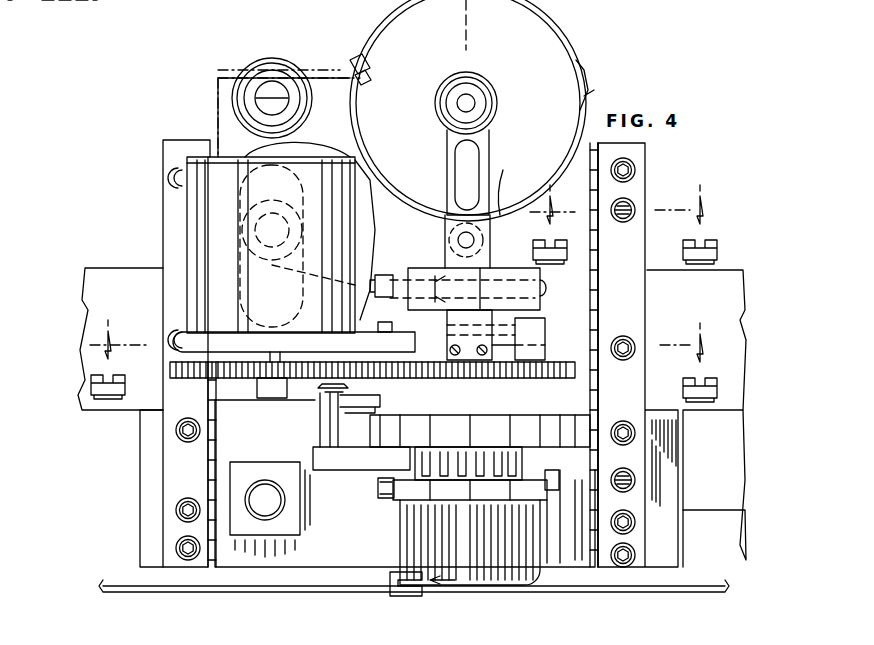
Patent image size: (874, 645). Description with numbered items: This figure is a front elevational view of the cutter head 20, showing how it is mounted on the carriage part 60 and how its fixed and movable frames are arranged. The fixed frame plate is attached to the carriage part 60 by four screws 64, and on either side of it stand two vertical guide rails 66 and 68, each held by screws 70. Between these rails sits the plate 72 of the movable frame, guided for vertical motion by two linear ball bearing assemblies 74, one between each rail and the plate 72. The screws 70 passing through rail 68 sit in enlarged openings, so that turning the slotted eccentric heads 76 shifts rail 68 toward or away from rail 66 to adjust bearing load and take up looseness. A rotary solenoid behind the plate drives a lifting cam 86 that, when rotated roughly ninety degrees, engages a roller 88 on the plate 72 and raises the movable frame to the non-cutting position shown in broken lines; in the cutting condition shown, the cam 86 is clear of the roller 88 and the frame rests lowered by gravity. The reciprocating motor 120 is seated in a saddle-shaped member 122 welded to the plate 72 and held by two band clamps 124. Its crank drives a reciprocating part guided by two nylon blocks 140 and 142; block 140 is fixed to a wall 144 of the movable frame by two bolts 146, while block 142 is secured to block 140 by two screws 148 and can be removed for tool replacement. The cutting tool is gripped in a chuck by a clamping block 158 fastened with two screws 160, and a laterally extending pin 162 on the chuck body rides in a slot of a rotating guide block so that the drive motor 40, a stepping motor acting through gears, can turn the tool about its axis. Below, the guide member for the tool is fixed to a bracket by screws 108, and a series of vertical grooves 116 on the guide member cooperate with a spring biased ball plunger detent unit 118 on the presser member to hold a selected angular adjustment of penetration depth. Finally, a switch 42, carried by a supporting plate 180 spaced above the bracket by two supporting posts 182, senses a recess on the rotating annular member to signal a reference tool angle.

The cutter head 20 is at (603, 64).
The drive motor 40 is at (190, 222).
The switch 42 is at (340, 412).
The carriage part 60 is at (668, 440).
The screws 64 is at (176, 430).
The vertical guide rail 66 is at (168, 205).
The vertical guide rail 68 is at (635, 185).
The screws 70 is at (176, 178).
The plate 72 is at (232, 70).
The linear ball bearing assemblies 74 is at (208, 462).
The eccentric heads 76 is at (632, 208).
The lifting cam 86 is at (300, 150).
The roller 88 is at (290, 66).
The screws 108 is at (378, 485).
The vertical grooves 116 is at (470, 460).
The spring biased ball plunger detent unit 118 is at (398, 500).
The motor 120 is at (540, 36).
The saddle-shaped member 122 is at (500, 198).
The band clamps 124 is at (588, 95).
The nylon block 140 is at (408, 256).
The nylon block 142 is at (542, 272).
The wall 144 is at (412, 232).
The bolts 146 is at (412, 318).
The screws 148 is at (542, 296).
The clamping block 158 is at (493, 346).
The screws 160 is at (482, 360).
The pin 162 is at (545, 332).
The supporting plate 180 is at (318, 393).
The supporting posts 182 is at (324, 437).